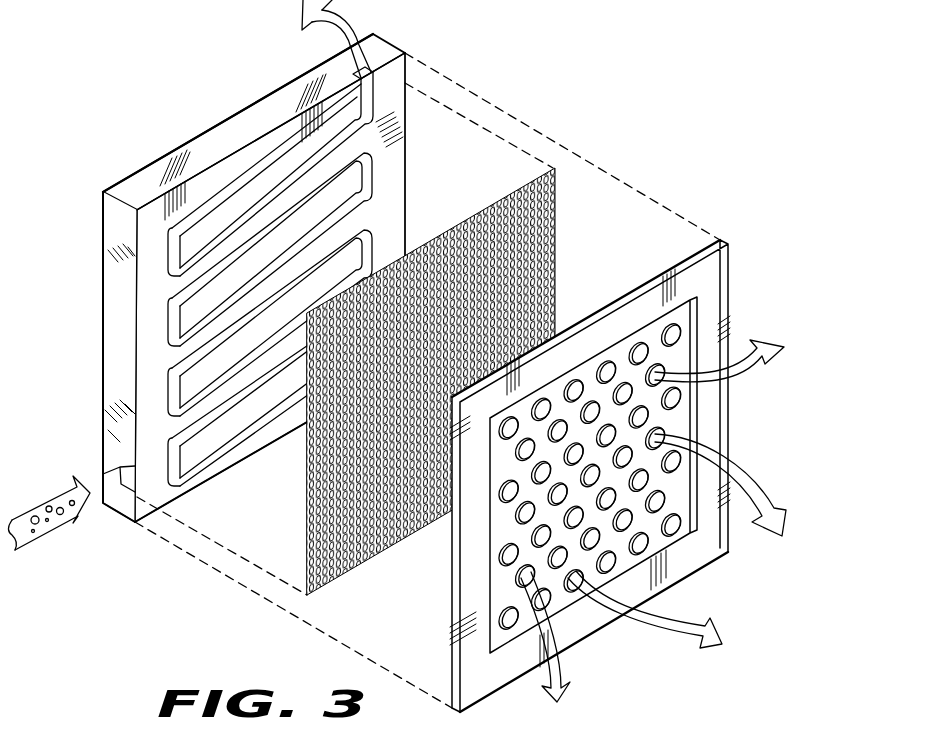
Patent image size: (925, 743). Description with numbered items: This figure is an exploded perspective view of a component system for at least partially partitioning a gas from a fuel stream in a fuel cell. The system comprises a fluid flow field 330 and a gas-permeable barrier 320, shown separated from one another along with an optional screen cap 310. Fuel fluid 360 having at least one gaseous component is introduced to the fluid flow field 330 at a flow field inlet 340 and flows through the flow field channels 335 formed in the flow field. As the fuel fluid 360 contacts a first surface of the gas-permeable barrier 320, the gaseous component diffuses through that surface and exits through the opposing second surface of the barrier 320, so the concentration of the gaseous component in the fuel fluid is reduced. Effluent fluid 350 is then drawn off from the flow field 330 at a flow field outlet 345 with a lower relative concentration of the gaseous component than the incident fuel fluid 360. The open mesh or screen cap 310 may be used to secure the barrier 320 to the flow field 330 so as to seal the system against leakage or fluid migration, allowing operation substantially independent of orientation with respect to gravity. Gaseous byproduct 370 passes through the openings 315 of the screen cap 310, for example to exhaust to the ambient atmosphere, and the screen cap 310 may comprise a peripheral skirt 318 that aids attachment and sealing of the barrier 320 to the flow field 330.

The screen cap 310 is at (580, 481).
The openings 315 is at (634, 345).
The peripheral skirt 318 is at (452, 573).
The gas-permeable barrier 320 is at (291, 514).
The fluid flow field 330 is at (211, 278).
The flow field channels 335 is at (225, 432).
The flow field inlet 340 is at (120, 470).
The flow field outlet 345 is at (352, 56).
The effluent fluid 350 is at (302, 16).
The fuel fluid 360 is at (47, 533).
The gaseous byproduct 370 is at (777, 343).